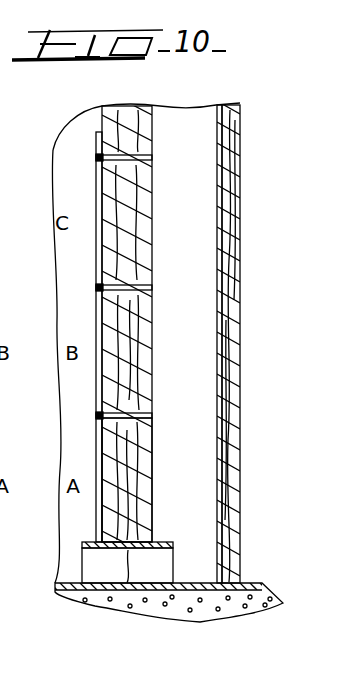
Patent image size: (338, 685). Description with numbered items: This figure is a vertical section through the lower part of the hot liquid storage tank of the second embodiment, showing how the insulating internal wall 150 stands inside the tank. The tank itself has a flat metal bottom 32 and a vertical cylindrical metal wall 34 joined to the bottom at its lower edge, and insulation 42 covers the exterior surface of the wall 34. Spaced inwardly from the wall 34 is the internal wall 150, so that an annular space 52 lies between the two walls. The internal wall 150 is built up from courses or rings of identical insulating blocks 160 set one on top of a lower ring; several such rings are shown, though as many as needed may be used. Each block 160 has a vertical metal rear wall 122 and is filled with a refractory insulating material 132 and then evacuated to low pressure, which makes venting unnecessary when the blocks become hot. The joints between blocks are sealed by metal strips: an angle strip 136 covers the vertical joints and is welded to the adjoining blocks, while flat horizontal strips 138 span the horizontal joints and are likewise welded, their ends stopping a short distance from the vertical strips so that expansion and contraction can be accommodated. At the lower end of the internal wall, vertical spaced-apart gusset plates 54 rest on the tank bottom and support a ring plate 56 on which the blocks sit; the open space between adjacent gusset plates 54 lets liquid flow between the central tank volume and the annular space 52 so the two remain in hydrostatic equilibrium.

The bottom 32 is at (192, 588).
The wall 34 is at (222, 148).
The insulation 42 is at (232, 207).
The annular space 52 is at (186, 292).
The gusset plates 54 is at (97, 572).
The ring plate 56 is at (132, 548).
The rear wall 122 is at (152, 385).
The refractory insulating material 132 is at (152, 525).
The angle strip 136 is at (97, 188).
The horizontal strips 138 is at (97, 415).
The internal wall 150 is at (183, 129).
The insulating block 160 is at (168, 474).